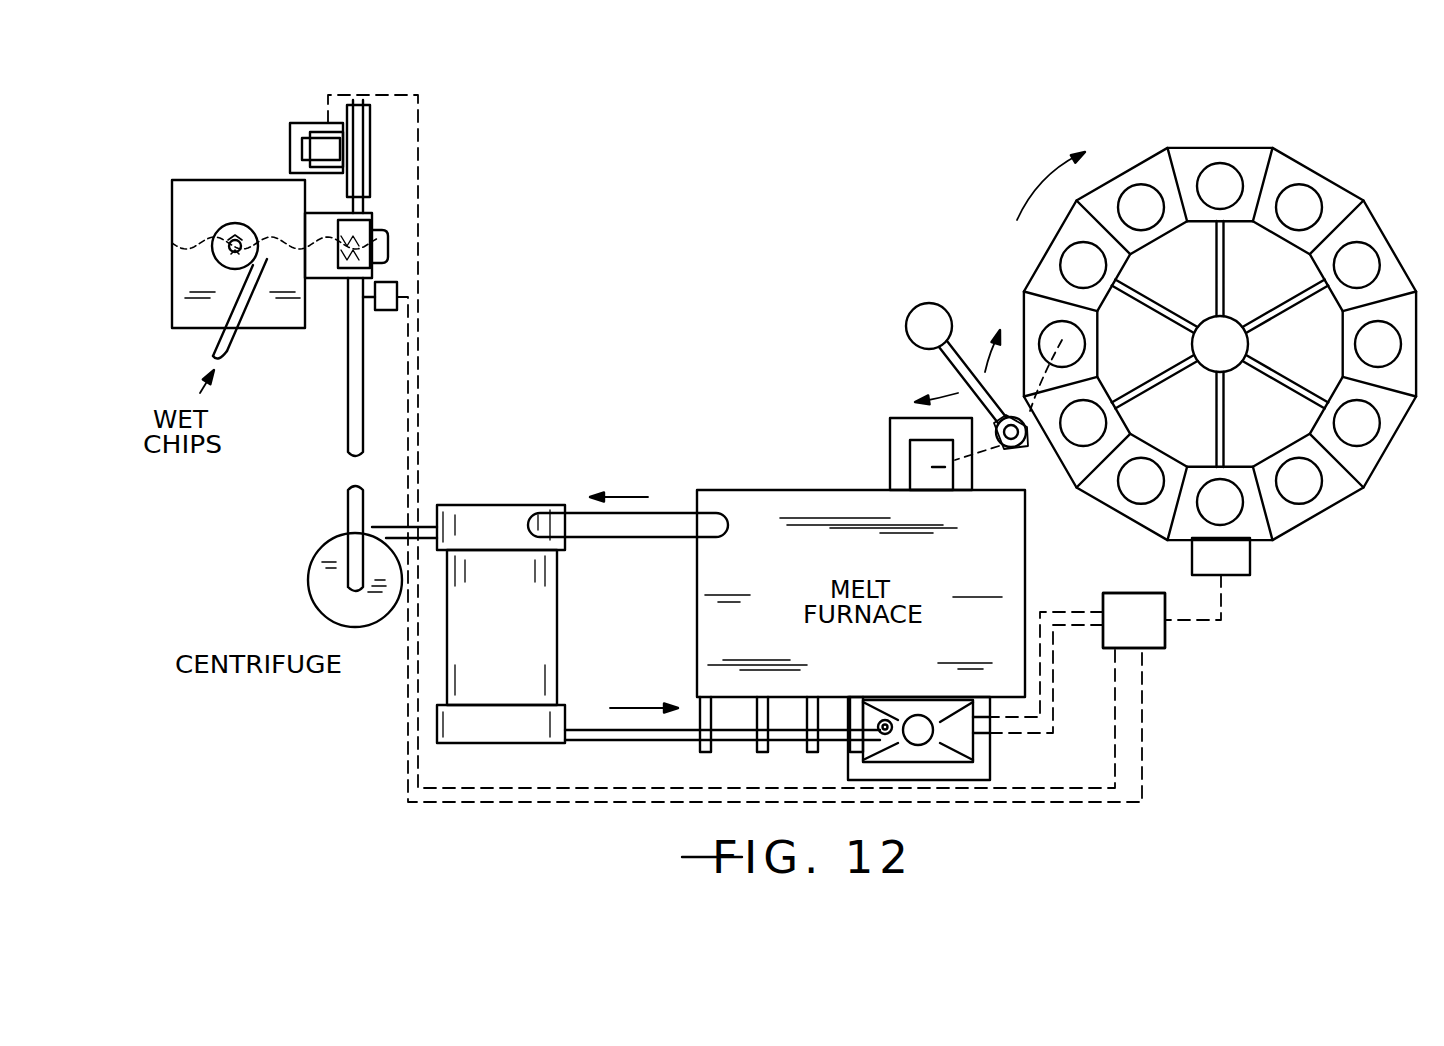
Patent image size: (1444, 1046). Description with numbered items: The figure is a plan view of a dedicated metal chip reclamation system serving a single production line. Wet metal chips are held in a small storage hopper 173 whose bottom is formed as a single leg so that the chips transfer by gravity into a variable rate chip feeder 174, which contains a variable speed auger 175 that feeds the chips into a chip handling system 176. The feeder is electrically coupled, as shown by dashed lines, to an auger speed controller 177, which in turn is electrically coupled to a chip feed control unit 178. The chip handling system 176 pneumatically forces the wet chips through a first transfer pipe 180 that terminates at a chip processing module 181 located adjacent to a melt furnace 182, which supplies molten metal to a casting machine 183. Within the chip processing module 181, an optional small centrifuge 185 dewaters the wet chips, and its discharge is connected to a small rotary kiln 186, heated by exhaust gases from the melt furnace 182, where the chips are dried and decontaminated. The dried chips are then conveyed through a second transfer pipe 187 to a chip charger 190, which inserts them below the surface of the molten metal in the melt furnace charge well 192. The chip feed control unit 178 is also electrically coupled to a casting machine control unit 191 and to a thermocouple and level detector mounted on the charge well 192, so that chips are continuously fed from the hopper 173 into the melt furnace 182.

The storage hopper 173 is at (175, 197).
The variable rate chip feeder 174 is at (385, 215).
The variable speed auger 175 is at (202, 218).
The chip handling system 176 is at (402, 122).
The auger speed controller 177 is at (393, 287).
The chip feed control unit 178 is at (358, 103).
The first transfer pipe 180 is at (348, 383).
The chip processing module 181 is at (452, 471).
The melt furnace 182 is at (1047, 583).
The casting machine 183 is at (1006, 238).
The centrifuge 185 is at (308, 570).
The rotary kiln 186 is at (543, 567).
The second transfer pipe 187 is at (642, 740).
The chip charger 190 is at (902, 672).
The casting machine control unit 191 is at (1252, 558).
The melt furnace charge well 192 is at (983, 753).